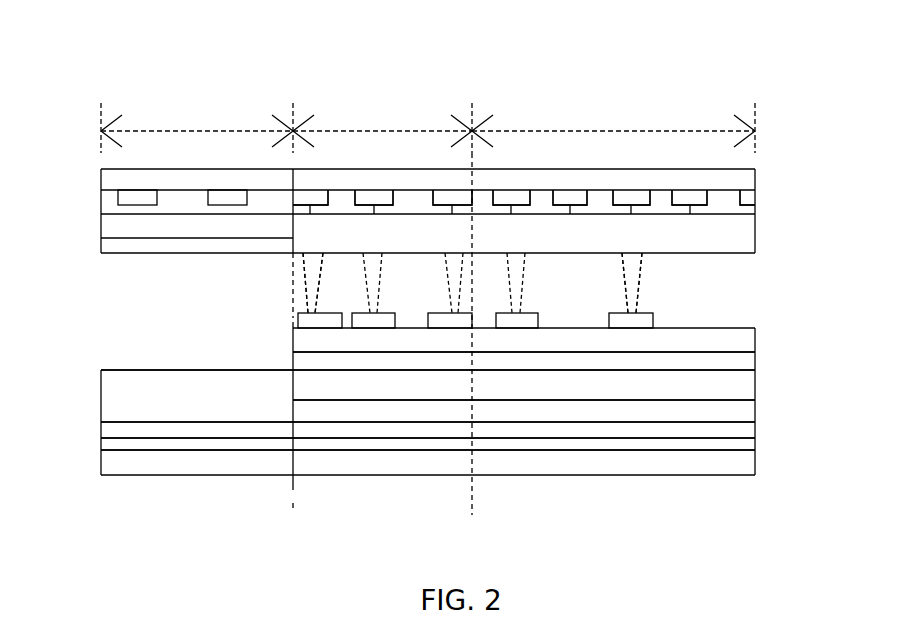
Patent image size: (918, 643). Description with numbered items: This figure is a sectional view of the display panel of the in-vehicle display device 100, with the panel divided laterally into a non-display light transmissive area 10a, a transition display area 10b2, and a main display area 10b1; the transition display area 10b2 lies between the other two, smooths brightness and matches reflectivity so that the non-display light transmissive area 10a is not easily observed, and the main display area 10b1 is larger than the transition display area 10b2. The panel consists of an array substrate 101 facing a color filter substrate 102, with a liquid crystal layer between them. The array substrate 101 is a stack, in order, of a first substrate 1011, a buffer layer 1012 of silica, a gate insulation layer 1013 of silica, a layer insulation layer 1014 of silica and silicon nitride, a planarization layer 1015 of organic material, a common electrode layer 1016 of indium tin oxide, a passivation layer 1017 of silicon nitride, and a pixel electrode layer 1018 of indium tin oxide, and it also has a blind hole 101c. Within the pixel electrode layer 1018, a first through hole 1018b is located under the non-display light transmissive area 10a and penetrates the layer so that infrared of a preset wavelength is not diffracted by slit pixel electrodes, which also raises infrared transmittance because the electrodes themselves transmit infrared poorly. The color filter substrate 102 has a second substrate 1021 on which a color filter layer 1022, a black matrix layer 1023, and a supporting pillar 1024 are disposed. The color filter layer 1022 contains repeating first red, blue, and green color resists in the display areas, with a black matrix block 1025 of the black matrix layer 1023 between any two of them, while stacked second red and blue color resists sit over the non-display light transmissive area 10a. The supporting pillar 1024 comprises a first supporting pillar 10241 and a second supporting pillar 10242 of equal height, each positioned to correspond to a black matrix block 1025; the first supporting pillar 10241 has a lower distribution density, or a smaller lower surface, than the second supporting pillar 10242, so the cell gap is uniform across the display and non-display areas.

The in-vehicle display device 100 is at (452, 60).
The non-display light transmissive area 10a is at (197, 126).
The transition display area 10b2 is at (382, 126).
The main display area 10b1 is at (613, 126).
The color filter substrate 102 is at (88, 170).
The array substrate 101 is at (88, 320).
The second substrate 1021 is at (735, 178).
The black matrix layer 1023 is at (696, 203).
The black matrix block 1025 is at (755, 195).
The color filter layer 1022 is at (740, 206).
The supporting pillar 1024 is at (640, 258).
The first supporting pillar 10241 is at (640, 282).
The second supporting pillar 10242 is at (307, 305).
The pixel electrode layer 1018 is at (645, 322).
The first through hole 1018b is at (152, 325).
The blind hole 101c is at (207, 355).
The passivation layer 1017 is at (735, 336).
The common electrode layer 1016 is at (735, 360).
The planarization layer 1015 is at (735, 383).
The layer insulation layer 1014 is at (735, 409).
The gate insulation layer 1013 is at (735, 427).
The buffer layer 1012 is at (735, 446).
The first substrate 1011 is at (735, 470).